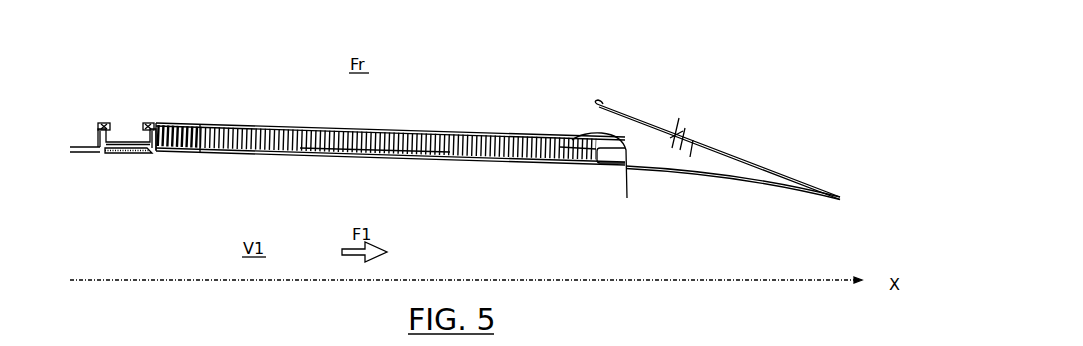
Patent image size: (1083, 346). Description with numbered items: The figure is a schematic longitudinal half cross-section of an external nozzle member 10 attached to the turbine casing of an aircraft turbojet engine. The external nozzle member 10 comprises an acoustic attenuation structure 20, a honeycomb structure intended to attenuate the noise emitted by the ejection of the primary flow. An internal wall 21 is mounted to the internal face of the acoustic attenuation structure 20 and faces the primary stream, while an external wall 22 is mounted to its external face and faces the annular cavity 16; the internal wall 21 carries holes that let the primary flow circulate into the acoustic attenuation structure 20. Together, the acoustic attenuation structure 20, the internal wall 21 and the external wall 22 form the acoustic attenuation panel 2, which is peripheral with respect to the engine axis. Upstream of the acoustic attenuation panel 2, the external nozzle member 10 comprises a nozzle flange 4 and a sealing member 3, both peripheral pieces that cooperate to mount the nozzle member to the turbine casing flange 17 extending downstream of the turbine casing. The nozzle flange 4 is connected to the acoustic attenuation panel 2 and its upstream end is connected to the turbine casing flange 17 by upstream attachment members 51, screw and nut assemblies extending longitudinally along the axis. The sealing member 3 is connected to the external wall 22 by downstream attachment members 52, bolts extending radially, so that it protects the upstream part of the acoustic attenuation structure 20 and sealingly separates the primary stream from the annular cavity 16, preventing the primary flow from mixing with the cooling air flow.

The acoustic attenuation panel 2 is at (645, 218).
The sealing member 3 is at (115, 154).
The nozzle flange 4 is at (133, 130).
The external nozzle member 10 is at (742, 98).
The annular cavity 16 is at (266, 73).
The turbine casing flange 17 is at (74, 118).
The acoustic attenuation structure 20 is at (570, 156).
The internal wall 21 is at (527, 166).
The external wall 22 is at (605, 177).
The upstream attachment members 51 is at (116, 127).
The downstream attachment members 52 is at (147, 126).